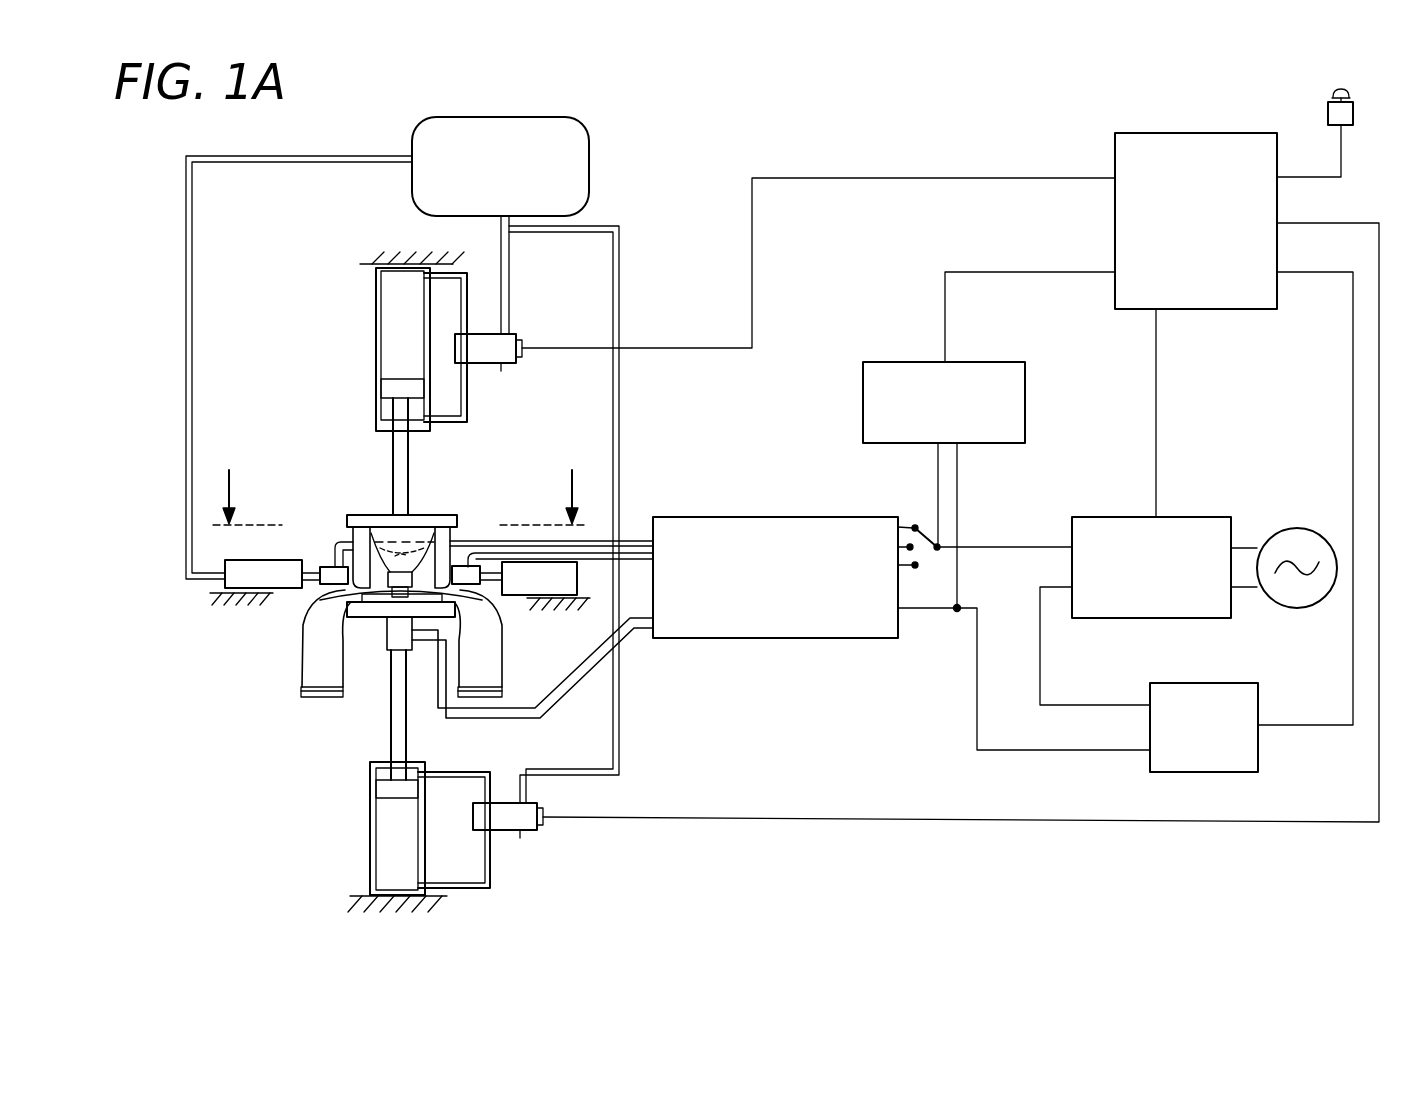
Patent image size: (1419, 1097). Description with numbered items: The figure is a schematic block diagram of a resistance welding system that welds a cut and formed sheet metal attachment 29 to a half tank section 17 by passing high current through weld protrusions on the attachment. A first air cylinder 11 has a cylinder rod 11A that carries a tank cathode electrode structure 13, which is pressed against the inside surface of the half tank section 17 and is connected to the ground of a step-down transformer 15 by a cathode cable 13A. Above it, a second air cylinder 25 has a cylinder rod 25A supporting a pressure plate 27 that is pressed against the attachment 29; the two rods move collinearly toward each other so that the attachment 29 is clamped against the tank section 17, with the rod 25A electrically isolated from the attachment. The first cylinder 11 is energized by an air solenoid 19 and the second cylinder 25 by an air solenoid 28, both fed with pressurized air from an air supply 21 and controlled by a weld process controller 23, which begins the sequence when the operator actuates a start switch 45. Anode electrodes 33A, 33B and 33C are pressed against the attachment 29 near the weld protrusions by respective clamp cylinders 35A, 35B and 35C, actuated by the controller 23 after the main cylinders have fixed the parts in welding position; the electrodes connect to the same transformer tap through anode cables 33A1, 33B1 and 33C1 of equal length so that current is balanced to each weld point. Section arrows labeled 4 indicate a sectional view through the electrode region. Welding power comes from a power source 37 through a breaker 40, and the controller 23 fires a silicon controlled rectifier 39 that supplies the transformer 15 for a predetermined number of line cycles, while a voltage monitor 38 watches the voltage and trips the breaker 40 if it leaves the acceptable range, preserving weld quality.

The air supply 21 is at (588, 126).
The second air cylinder 25 is at (376, 318).
The air solenoid 28 is at (506, 368).
The cylinder rod 25A is at (393, 455).
The section line 4- 4 is at (398, 482).
The clamp cylinder 35A is at (271, 560).
The electrode 33A is at (332, 583).
The cable 33A1 is at (336, 547).
The clamp cylinder 35C is at (412, 572).
The attachment 29 is at (434, 556).
The pressure plate 27 is at (408, 571).
The electrode 33C is at (390, 570).
The electrode 33B is at (468, 584).
The clamp cylinder 35B is at (536, 588).
The cable 33C1 is at (640, 548).
The tank cathode electrode structure 13 is at (370, 613).
The half tank section 17 is at (305, 676).
The cylinder rod 11A is at (391, 713).
The cable 13A is at (463, 720).
The cable 33B1 is at (634, 560).
The first air cylinder 11 is at (368, 806).
The air solenoid 19 is at (508, 832).
The step-down transformer 15 is at (772, 517).
The voltage monitor 38 is at (1000, 362).
The weld process controller 23 is at (1115, 215).
The start switch 45 is at (1355, 108).
The breaker 40 is at (1103, 517).
The power source 37 is at (1301, 527).
The silicon controlled rectifier 39 is at (1237, 683).